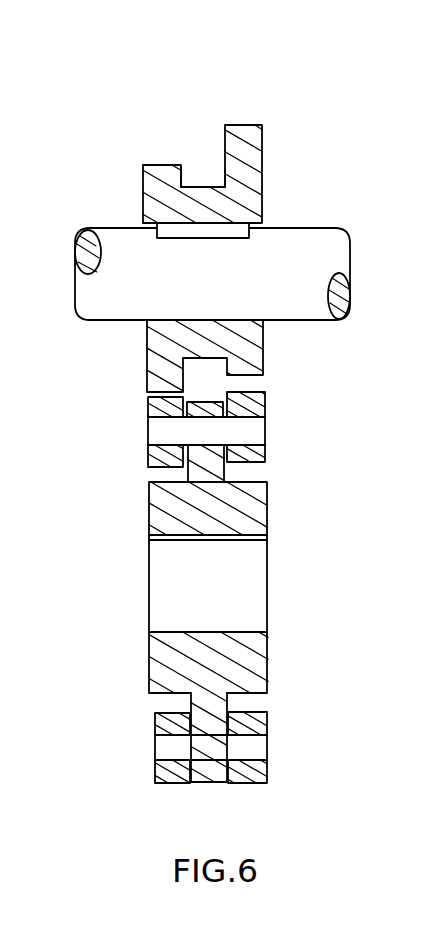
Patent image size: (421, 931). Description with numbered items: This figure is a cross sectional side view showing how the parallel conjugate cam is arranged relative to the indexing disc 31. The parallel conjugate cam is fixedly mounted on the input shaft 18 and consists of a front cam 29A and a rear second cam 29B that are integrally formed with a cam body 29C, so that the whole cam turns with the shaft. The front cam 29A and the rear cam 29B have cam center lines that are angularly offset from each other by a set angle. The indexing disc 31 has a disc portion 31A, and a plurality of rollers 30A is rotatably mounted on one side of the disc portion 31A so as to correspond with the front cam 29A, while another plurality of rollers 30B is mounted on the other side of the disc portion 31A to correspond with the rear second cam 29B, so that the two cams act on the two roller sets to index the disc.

The input shaft 18 is at (312, 238).
The front cam 29A is at (238, 126).
The rear cam 29B is at (157, 365).
The cam body 29C is at (195, 188).
The rollers 30A is at (265, 398).
The rollers 30B is at (152, 412).
The indexing disc 31 is at (287, 527).
The disc portion 31A is at (224, 472).